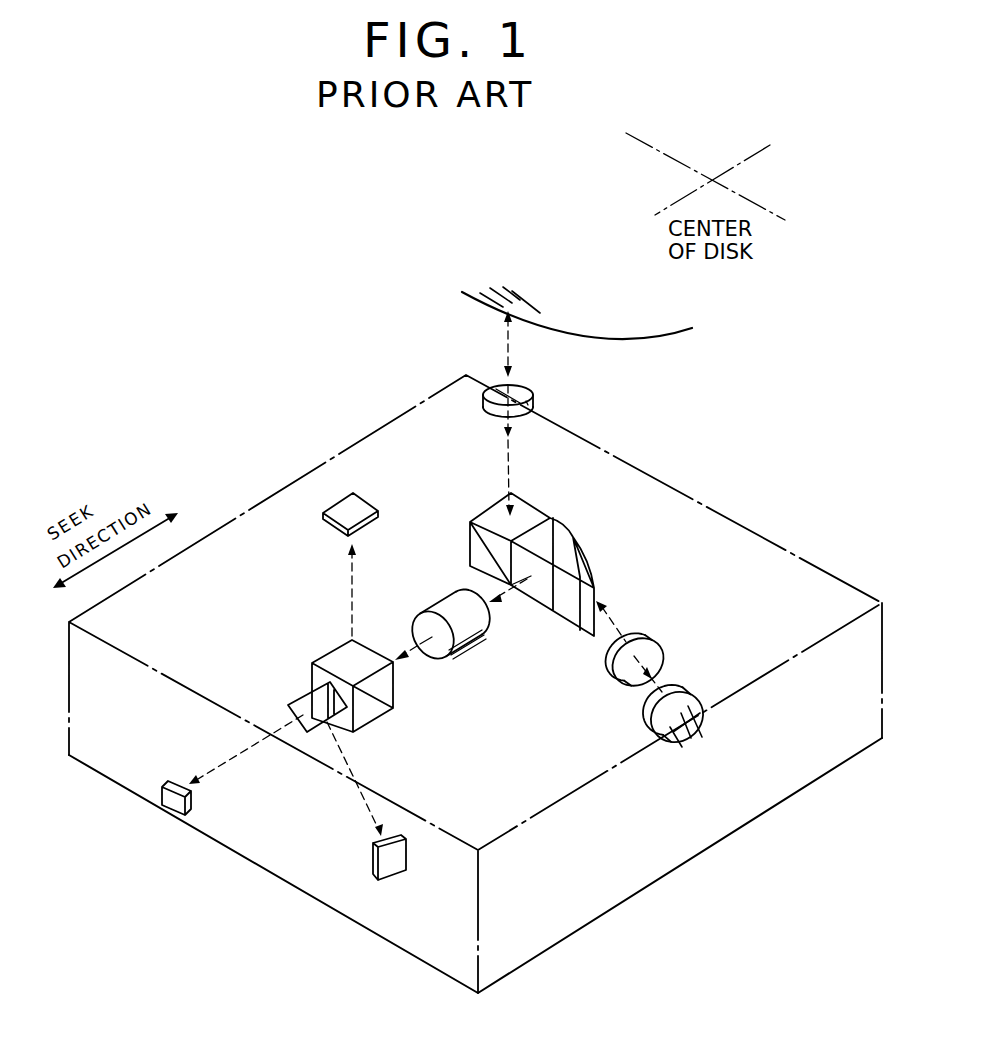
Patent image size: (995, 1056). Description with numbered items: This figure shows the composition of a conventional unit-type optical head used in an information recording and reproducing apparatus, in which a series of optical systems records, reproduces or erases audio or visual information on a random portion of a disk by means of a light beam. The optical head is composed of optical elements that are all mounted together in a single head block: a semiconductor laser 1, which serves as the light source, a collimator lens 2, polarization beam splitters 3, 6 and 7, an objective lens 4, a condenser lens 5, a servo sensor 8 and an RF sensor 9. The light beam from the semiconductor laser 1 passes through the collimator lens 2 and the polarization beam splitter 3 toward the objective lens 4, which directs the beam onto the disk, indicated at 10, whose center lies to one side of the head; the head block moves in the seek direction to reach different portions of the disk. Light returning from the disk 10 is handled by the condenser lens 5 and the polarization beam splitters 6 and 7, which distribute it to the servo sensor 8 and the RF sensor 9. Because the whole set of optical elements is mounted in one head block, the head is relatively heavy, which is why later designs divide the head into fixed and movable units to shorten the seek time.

The semiconductor laser 1 is at (692, 690).
The collimator lens 2 is at (663, 647).
The polarization beam splitter 3 is at (573, 563).
The objective lens 4 is at (535, 399).
The condenser lens 5 is at (470, 643).
The polarization beam splitter 6 is at (378, 722).
The polarization beam splitter 7 is at (307, 707).
The servo sensor 8 is at (380, 511).
The RF sensor 9 is at (172, 781).
The optical disk 10 is at (478, 301).